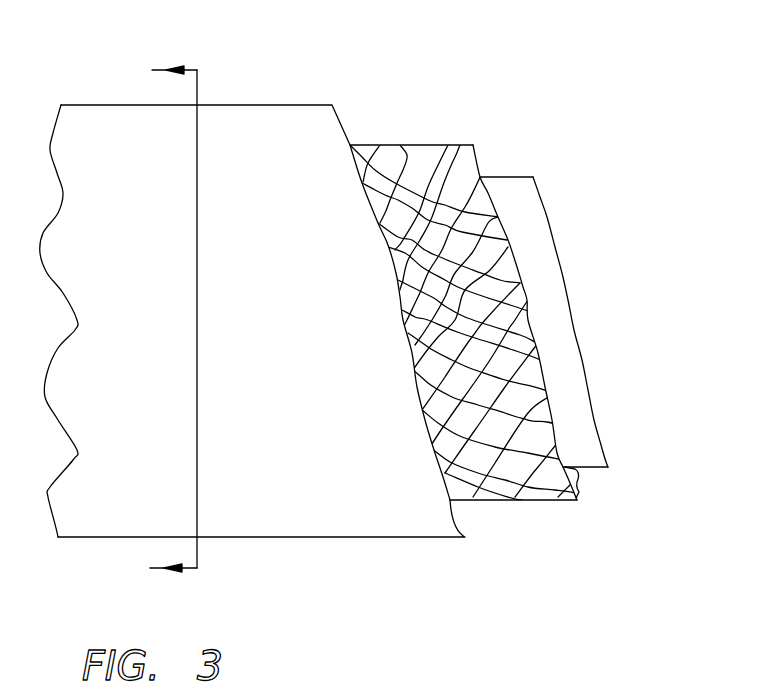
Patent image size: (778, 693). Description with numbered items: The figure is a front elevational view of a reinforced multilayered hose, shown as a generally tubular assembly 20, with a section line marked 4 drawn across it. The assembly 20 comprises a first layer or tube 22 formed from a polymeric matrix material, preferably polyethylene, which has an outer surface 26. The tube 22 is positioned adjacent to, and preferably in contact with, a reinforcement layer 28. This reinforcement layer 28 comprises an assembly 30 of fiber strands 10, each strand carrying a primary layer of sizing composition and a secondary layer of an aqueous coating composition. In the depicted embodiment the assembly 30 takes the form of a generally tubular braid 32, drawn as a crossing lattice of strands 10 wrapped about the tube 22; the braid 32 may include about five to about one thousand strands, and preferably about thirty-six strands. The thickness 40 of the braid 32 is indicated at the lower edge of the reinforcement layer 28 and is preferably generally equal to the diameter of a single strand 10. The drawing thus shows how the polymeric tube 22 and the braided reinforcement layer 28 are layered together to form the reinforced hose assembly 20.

The section line 4- 4 is at (157, 320).
The fiber strands 10 is at (481, 176).
The generally tubular assembly 20 is at (328, 538).
The tube 22 is at (605, 473).
The outer surface 26 is at (581, 334).
The reinforcement layer 28 is at (432, 145).
The assembly of fiber strands 30 is at (359, 684).
The braid 32 is at (408, 145).
The thickness of the braid 40 is at (586, 488).